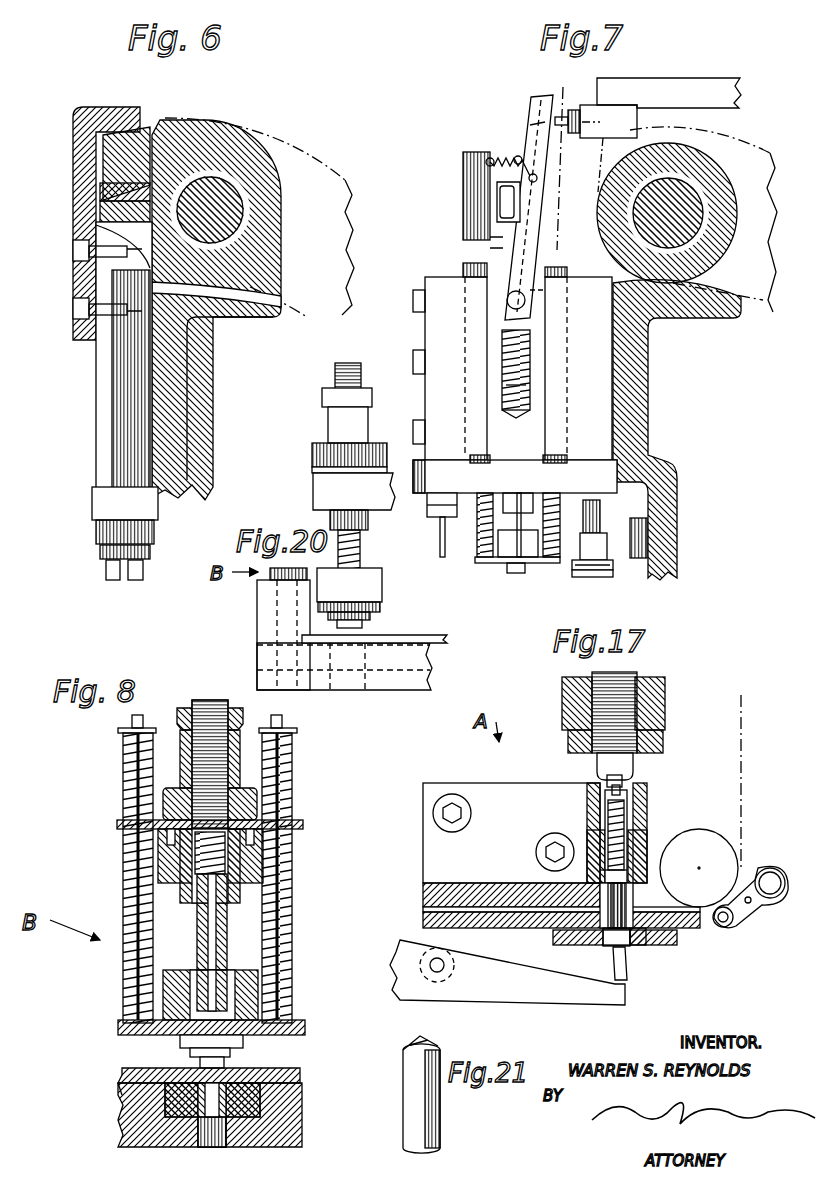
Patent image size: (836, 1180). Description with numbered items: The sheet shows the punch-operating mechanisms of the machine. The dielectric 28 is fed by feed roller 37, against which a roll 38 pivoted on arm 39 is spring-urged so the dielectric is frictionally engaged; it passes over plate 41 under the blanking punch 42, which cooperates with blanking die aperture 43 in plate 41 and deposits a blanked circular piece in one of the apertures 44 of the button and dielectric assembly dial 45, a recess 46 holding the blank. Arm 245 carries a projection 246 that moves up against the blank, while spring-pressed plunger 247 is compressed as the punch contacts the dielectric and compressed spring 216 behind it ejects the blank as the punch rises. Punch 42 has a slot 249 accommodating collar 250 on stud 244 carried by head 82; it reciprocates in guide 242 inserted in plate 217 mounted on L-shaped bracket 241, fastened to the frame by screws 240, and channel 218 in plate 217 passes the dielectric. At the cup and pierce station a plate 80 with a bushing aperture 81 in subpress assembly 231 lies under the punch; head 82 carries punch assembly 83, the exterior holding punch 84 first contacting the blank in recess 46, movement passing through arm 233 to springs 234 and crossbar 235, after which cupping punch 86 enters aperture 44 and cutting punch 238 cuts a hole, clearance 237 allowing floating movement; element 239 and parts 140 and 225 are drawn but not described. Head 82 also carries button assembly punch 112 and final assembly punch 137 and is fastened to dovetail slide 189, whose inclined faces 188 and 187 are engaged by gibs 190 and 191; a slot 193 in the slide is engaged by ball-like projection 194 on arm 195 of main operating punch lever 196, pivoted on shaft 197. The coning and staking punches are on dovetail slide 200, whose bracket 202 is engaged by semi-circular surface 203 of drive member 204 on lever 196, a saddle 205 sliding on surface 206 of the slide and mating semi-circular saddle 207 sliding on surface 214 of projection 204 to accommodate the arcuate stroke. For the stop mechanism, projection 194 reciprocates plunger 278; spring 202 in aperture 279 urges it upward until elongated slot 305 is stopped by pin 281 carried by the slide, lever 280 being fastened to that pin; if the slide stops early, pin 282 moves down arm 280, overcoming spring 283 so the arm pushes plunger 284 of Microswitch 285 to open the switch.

In FIG. 6, the main operating punch lever 196 is at (322, 170).
In FIG. 7, the main operating punch lever 196 is at (705, 148).
In FIG. 6, the shaft 197 is at (226, 195).
In FIG. 7, the shaft 197 is at (690, 205).
In FIG. 6, the bracket 202 is at (80, 214).
In FIG. 7, the bracket 202 is at (530, 385).
In FIG. 6, the semi-circular surface 203 is at (145, 130).
In FIG. 6, the drive member 204 is at (115, 160).
In FIG. 6, the saddle 205 is at (120, 215).
In FIG. 6, the surface of slide 206 is at (105, 252).
In FIG. 6, the semi-circular saddle 207 is at (110, 191).
In FIG. 6, the surface of operating projection 214 is at (100, 262).
In FIG. 6, the dovetail slide 200 is at (130, 403).
In FIG. 6, the nut 140 is at (105, 573).
In FIG. 6, the stud 225 is at (112, 580).
In FIG. 7, the arm 195 is at (538, 120).
In FIG. 7, the plunger 284 is at (562, 95).
In FIG. 7, the Microswitch 285 is at (600, 108).
In FIG. 7, the lever 280 is at (530, 125).
In FIG. 7, the pin 282 is at (515, 158).
In FIG. 7, the spring 283 is at (470, 162).
In FIG. 7, the slot 193 is at (497, 190).
In FIG. 7, the ball-like projection 194 is at (510, 200).
In FIG. 7, the plunger 278 is at (488, 248).
In FIG. 7, the dovetail slide 189 is at (463, 270).
In FIG. 7, the inclined face 188 is at (567, 272).
In FIG. 7, the elongated slot 305 is at (548, 290).
In FIG. 7, the pin 281 is at (507, 300).
In FIG. 7, the aperture 279 is at (530, 335).
In FIG. 7, the gib 191 is at (440, 333).
In FIG. 7, the gib 190 is at (577, 352).
In FIG. 7, the inclined face 187 is at (432, 470).
In FIG. 7, the head 82 is at (430, 496).
In FIG. 8, the head 82 is at (234, 880).
In FIG. 17, the head 82 is at (667, 693).
In FIG. 7, the button assembly punch 112 is at (440, 538).
In FIG. 7, the blanking punch 42 is at (598, 522).
In FIG. 17, the blanking punch 42 is at (630, 813).
In FIG. 21, the blanking punch 42 is at (404, 1092).
In FIG. 7, the L-shaped bracket 241 is at (647, 540).
In FIG. 17, the L-shaped bracket 241 is at (480, 785).
In FIG. 7, the assembly punch 137 is at (510, 540).
In FIG. 7, the crossbar 235 is at (538, 562).
In FIG. 20, the crossbar 235 is at (382, 607).
In FIG. 8, the crossbar 235 is at (305, 1027).
In FIG. 7, the exterior holding punch 84 is at (512, 574).
In FIG. 20, the exterior holding punch 84 is at (368, 620).
In FIG. 8, the exterior holding punch 84 is at (192, 1054).
In FIG. 7, the plate 217 is at (572, 565).
In FIG. 17, the plate 217 is at (425, 890).
In FIG. 7, the plate 41 is at (580, 572).
In FIG. 17, the plate 41 is at (410, 920).
In FIG. 7, the guide 242 is at (604, 545).
In FIG. 17, the guide 242 is at (590, 832).
In FIG. 7, the channel 218 is at (592, 578).
In FIG. 17, the channel 218 is at (425, 909).
In FIG. 20, the arm 233 is at (320, 468).
In FIG. 8, the arm 233 is at (305, 826).
In FIG. 7, the springs 234 is at (518, 525).
In FIG. 20, the springs 234 is at (360, 580).
In FIG. 8, the springs 234 is at (123, 855).
In FIG. 20, the subpress assembly 231 is at (257, 610).
In FIG. 8, the subpress assembly 231 is at (160, 1042).
In FIG. 20, the button and dielectric assembly dial 45 is at (440, 641).
In FIG. 8, the button and dielectric assembly dial 45 is at (300, 1074).
In FIG. 17, the button and dielectric assembly dial 45 is at (553, 939).
In FIG. 8, the housing 239 is at (227, 867).
In FIG. 8, the cutting punch 238 is at (212, 922).
In FIG. 8, the clearance 237 is at (231, 942).
In FIG. 8, the cupping punch 86 is at (222, 948).
In FIG. 8, the punch assembly 83 is at (185, 950).
In FIG. 8, the recess 46 is at (228, 1065).
In FIG. 17, the recess 46 is at (627, 950).
In FIG. 8, the plate 80 is at (290, 1110).
In FIG. 8, the aperture 81 is at (165, 1100).
In FIG. 17, the stud 244 is at (604, 778).
In FIG. 17, the collar 250 is at (603, 784).
In FIG. 17, the screws 240 is at (471, 814).
In FIG. 17, the spring 216 is at (633, 832).
In FIG. 17, the slot 249 is at (632, 788).
In FIG. 21, the slot 249 is at (410, 1052).
In FIG. 17, the spring-pressed plunger 247 is at (600, 876).
In FIG. 17, the apertures 44 is at (607, 947).
In FIG. 17, the blanking die aperture 43 is at (650, 940).
In FIG. 17, the projection 246 is at (630, 970).
In FIG. 17, the roller 37 is at (698, 830).
In FIG. 17, the dielectric 28 is at (742, 722).
In FIG. 17, the arm 39 is at (766, 906).
In FIG. 17, the roll 38 is at (727, 928).
In FIG. 17, the arm 245 is at (525, 999).